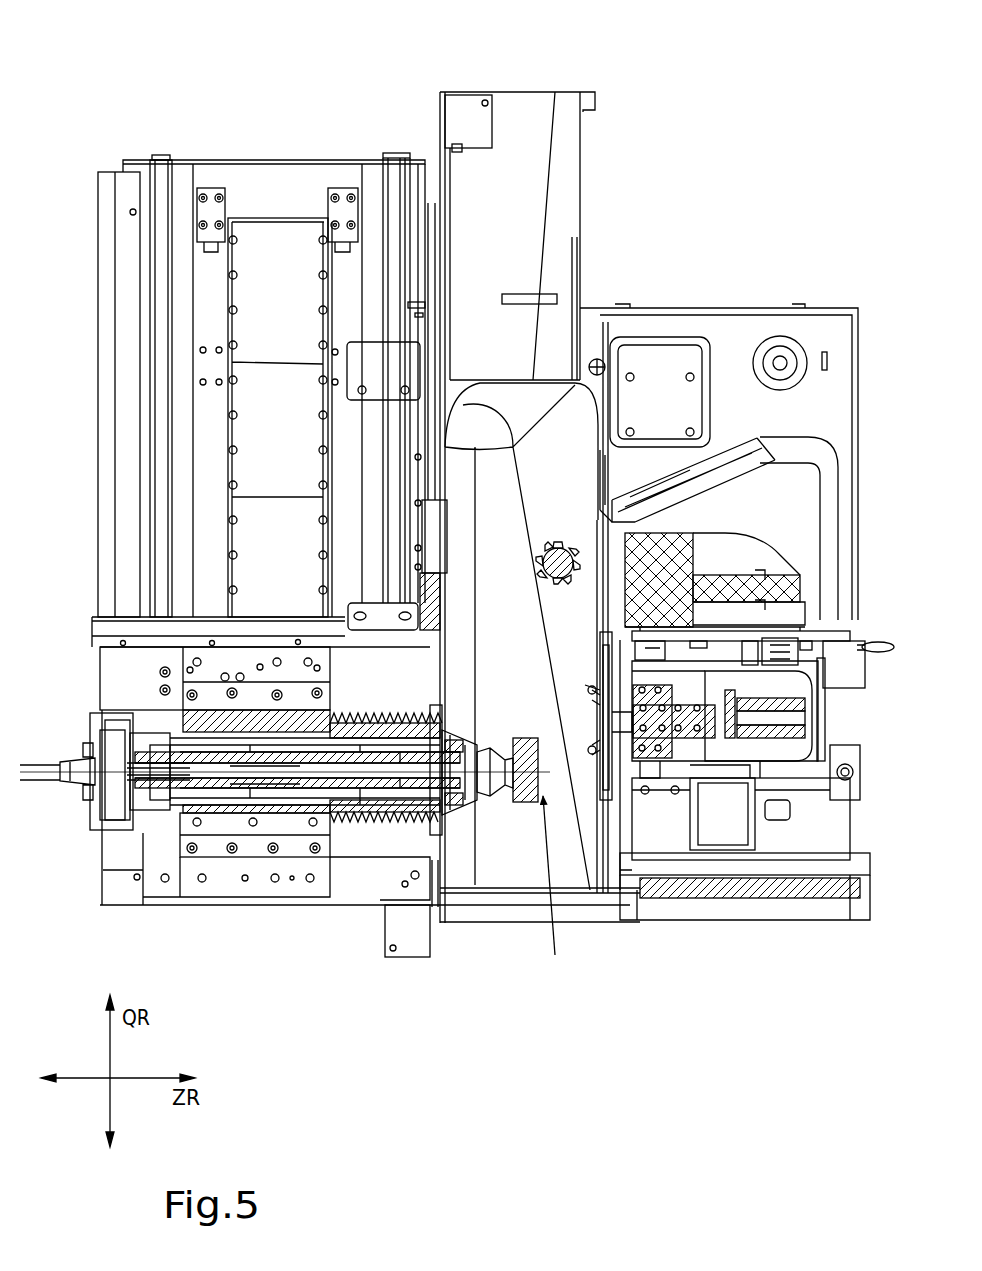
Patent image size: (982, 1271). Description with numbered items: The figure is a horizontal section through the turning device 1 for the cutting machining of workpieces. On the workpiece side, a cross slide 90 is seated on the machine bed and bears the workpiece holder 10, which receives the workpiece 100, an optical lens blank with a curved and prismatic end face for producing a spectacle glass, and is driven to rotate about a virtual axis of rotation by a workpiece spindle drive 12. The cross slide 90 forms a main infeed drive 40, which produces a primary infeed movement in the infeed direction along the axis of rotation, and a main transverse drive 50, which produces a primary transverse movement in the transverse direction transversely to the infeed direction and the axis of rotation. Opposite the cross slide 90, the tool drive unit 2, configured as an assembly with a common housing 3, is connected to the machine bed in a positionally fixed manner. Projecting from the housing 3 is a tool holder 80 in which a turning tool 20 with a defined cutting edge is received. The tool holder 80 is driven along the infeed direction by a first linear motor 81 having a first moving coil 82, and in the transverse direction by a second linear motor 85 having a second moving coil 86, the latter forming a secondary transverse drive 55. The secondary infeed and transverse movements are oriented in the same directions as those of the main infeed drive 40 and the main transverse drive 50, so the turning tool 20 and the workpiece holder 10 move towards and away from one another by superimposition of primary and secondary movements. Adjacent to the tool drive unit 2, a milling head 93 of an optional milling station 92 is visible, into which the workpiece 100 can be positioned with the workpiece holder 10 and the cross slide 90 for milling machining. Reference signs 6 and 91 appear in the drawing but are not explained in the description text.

The turning device 1 is at (147, 50).
The tool drive unit 2 is at (766, 704).
The housing 3 is at (797, 780).
The tool holder 6 is at (777, 718).
The workpiece holder 10 is at (491, 800).
The workpiece spindle drive 12 is at (240, 810).
The turning tool 20 is at (578, 678).
The main infeed drive 40 is at (355, 880).
The main transverse drive 50 is at (150, 576).
The secondary transverse drive 55 is at (749, 885).
The tool holder 80 is at (647, 778).
The first linear motor 81 is at (877, 791).
The first moving coil 82 is at (852, 782).
The second linear motor 85 is at (749, 885).
The second moving coil 86 is at (713, 800).
The cross slide 90 is at (177, 663).
The spindle bearing 91 is at (203, 703).
The milling station 92 is at (620, 407).
The milling head 93 is at (573, 527).
The workpiece 100 is at (523, 805).